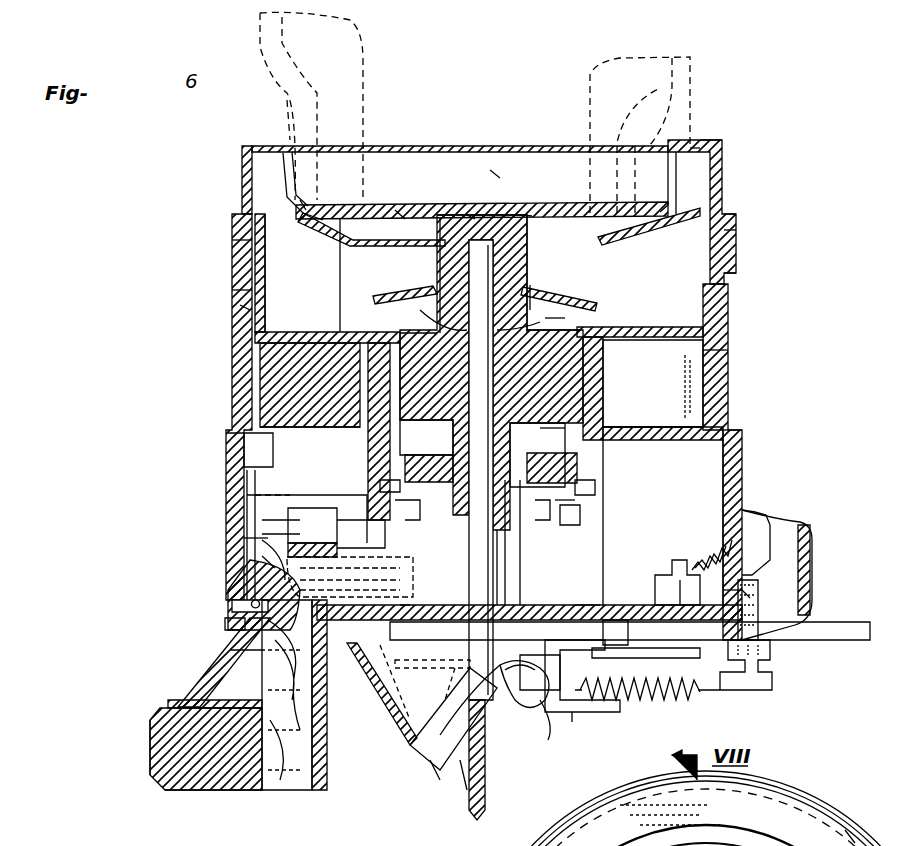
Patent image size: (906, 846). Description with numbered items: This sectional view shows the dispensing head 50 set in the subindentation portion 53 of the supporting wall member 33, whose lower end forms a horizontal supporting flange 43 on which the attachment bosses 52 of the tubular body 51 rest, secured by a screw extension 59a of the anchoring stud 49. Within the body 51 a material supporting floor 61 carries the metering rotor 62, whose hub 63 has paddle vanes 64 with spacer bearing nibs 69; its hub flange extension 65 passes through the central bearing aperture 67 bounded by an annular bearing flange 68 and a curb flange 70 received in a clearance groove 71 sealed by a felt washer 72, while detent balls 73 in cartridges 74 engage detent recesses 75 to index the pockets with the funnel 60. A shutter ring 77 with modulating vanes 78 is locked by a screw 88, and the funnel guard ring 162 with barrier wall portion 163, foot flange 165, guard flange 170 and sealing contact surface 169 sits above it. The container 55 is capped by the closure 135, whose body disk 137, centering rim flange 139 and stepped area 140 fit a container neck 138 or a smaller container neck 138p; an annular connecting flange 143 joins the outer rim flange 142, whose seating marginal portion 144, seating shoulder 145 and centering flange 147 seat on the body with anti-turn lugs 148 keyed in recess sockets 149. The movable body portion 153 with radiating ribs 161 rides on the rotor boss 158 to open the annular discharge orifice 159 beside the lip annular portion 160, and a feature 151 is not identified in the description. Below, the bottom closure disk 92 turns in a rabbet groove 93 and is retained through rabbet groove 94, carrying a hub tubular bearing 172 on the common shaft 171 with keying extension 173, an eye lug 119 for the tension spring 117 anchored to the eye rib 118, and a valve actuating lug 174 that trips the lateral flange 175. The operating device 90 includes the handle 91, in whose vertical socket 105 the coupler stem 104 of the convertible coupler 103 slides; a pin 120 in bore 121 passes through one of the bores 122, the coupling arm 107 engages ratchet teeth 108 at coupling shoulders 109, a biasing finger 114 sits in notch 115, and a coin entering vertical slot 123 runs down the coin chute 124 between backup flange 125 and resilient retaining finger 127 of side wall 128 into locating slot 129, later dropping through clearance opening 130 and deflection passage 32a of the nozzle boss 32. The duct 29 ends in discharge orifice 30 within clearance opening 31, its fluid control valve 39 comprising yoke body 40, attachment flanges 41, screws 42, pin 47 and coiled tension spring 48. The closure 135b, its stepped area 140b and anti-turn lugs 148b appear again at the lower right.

The dispensing head 50 is at (128, 381).
The closure cap 135 is at (741, 182).
The centering rim flange 139 is at (700, 145).
The annular connecting and reinforcing flange 143 is at (712, 143).
The outer perimeter rim flange 142 is at (736, 210).
The thickened annular seating marginal portion 144 is at (738, 236).
The internal recessed seating shoulder 145 is at (740, 262).
The particulate material supply container 55 is at (262, 37).
The container neck 138 is at (290, 122).
The smaller diameter container neck 138p is at (640, 135).
The stepped area 140 is at (336, 210).
The body disk 137 is at (305, 205).
The chamber sealing contact surface 169 is at (400, 216).
The lid cavity 151 is at (510, 162).
The annular discharge orifice 159 is at (470, 216).
The rotor boss 158 is at (528, 214).
The guard flange 170 is at (640, 228).
The lip annular portion 160 is at (375, 228).
The funnel guard ring 162 is at (240, 246).
The anti-turn lugs 148 is at (248, 268).
The annular centering flange 147 is at (236, 290).
The recess sockets 149 is at (240, 305).
The barrier wall portion 163 is at (335, 260).
The shutter ring 77 is at (310, 308).
The foot flange 165 is at (382, 296).
The radiating ribs 161 is at (385, 300).
The movable body portion 153 is at (542, 290).
The metering rotor 62 is at (560, 316).
The screw 88 is at (491, 457).
The hub 63 is at (605, 328).
The clearance groove 71 is at (404, 350).
The common shaft 171 is at (500, 360).
The felt washer 72 is at (608, 350).
The modulating vanes 78 is at (700, 360).
The paddle vanes 64 is at (262, 390).
The spacer bearing nibs 69 is at (330, 398).
The curb flange 70 is at (398, 394).
The central bearing aperture 67 is at (550, 425).
The hub flange extension 65 is at (400, 436).
The cartridges 74 is at (548, 455).
The annular bearing flange 68 is at (590, 448).
The material supporting floor 61 is at (668, 448).
The body 51 is at (740, 458).
The detent recesses 75 is at (370, 465).
The detent balls 73 is at (375, 478).
The vertical backup flange 125 is at (298, 500).
The funnel 60 is at (262, 482).
The locating slot 129 is at (382, 508).
The resilient retaining finger 127 is at (355, 540).
The ratchet teeth 108 is at (420, 525).
The coupling shoulder 109 is at (570, 510).
The coupling arm 107 is at (405, 590).
The clearance opening 130 is at (408, 610).
The cutback right side wall 128 is at (262, 528).
The convertible coupler 103 is at (248, 547).
The coin chute 124 is at (262, 540).
The vertical slot 123 is at (262, 560).
The biasing finger 114 is at (258, 595).
The notch 115 is at (255, 620).
The coupler stem 104 is at (240, 640).
The vertical socket 105 is at (250, 660).
The bores 122 is at (272, 680).
The bore 121 is at (178, 705).
The pin 120 is at (215, 720).
The handle 91 is at (160, 748).
The operating device 90 is at (149, 801).
The deflection passage 32a is at (352, 660).
The lateral flange 175 is at (555, 608).
The hub tubular bearing 172 is at (512, 560).
The bottom closure disk 92 is at (585, 605).
The valve actuating lug 174 is at (612, 605).
The eye lug 119 is at (660, 570).
The tension spring 117 is at (700, 538).
The rabbet groove 93 is at (728, 600).
The fixed eye rib 118 is at (742, 513).
The subindentation portion 53 is at (808, 538).
The attachment bosses 52 is at (758, 585).
The screw extension 59a is at (760, 598).
The horizontal supporting flange 43 is at (805, 628).
The rabbet groove 94 is at (730, 622).
The coiled tension spring 48 is at (675, 700).
The anchoring stud 49 is at (768, 672).
The pin 47 is at (580, 740).
The fluid control valve 39 is at (563, 733).
The yoke body 40 is at (495, 725).
The keying extension 173 is at (548, 740).
The supporting wall member 33 is at (487, 800).
The clearance opening 31 is at (462, 790).
The discharge orifice 30 is at (430, 790).
The duct 29 is at (418, 762).
The dispensing nozzle boss 32 is at (378, 740).
The attachment flanges 41 is at (400, 660).
The screws 42 is at (440, 680).
The anti-turn lugs 148b is at (728, 806).
The stepped area 140b is at (773, 832).
The closure cap 135b is at (861, 810).